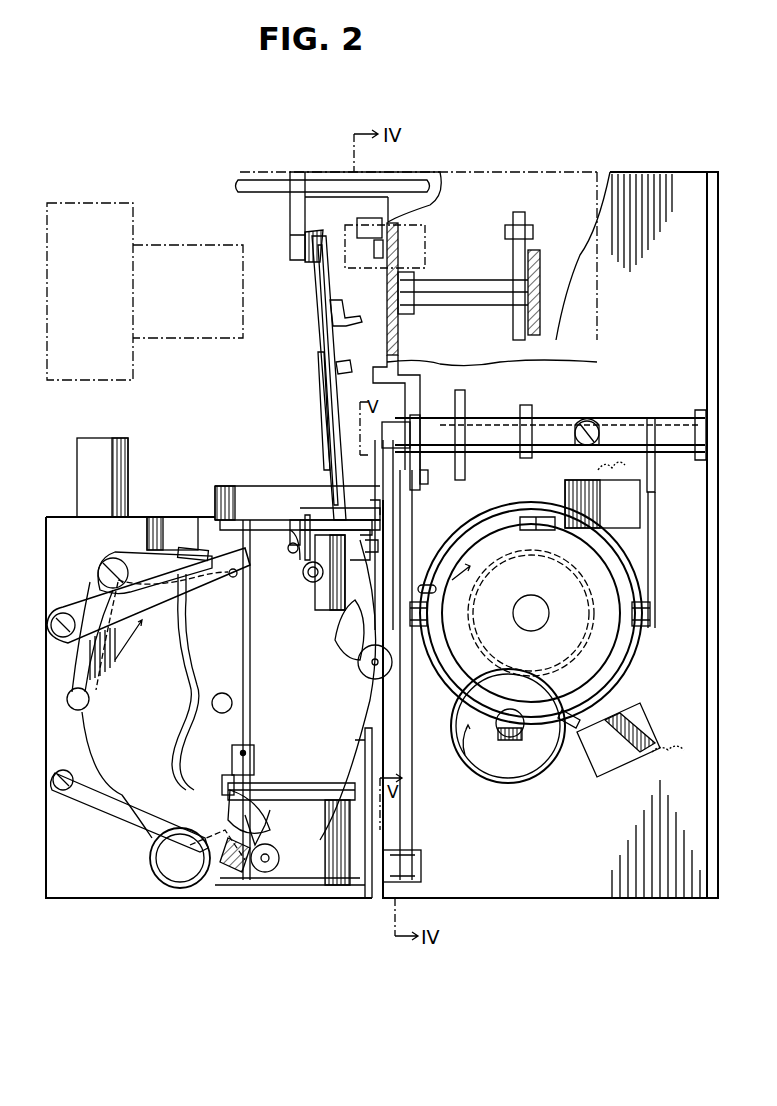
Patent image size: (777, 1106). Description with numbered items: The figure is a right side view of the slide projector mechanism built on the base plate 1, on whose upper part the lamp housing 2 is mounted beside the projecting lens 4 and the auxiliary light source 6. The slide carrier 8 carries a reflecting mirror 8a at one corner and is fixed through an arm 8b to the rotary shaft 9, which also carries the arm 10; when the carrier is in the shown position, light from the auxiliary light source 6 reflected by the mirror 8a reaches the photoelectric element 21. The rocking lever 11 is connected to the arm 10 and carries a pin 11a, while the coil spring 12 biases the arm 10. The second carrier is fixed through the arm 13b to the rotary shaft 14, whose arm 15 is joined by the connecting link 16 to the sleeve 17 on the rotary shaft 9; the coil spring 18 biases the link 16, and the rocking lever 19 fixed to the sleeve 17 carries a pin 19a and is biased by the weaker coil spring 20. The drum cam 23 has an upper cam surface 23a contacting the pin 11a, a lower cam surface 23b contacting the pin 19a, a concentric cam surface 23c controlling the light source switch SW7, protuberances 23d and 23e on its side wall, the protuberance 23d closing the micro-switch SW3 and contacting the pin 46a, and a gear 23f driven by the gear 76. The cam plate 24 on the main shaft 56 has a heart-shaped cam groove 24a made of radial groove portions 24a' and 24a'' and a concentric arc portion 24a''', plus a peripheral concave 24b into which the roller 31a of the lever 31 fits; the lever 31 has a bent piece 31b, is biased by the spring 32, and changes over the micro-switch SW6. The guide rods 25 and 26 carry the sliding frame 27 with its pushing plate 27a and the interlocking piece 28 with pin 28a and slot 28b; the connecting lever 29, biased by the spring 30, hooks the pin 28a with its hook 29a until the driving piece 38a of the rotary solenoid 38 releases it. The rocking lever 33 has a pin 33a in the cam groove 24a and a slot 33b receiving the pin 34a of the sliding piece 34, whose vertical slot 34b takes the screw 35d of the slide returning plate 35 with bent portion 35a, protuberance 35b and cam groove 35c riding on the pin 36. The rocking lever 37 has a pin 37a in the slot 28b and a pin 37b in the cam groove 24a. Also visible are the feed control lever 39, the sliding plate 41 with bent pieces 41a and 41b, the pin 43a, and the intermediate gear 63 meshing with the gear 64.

The base plate 1 is at (710, 172).
The lamp housing 2 is at (602, 280).
The projecting lens 4 is at (135, 224).
The auxiliary light source 6 is at (425, 230).
The slide carrier 8 is at (357, 224).
The reflecting mirror 8a is at (384, 248).
The arm 8b is at (412, 378).
The rotary shaft 9 is at (462, 430).
The arm 10 is at (420, 468).
The rocking lever 11 is at (413, 822).
The pin 11a is at (428, 616).
The coil spring 12 is at (456, 410).
The arm 13b is at (410, 314).
The rotary shaft 14 is at (503, 290).
The arm 15 is at (513, 246).
The connecting link 16 is at (528, 332).
The sleeve 17 is at (492, 460).
The coil spring 18 is at (577, 418).
The rocking lever 19 is at (656, 582).
The pin 19a is at (645, 626).
The coil spring 20 is at (660, 452).
The photoelectric element 21 is at (320, 262).
The drum cam 23 is at (514, 648).
The upper cam surface 23a is at (520, 510).
The lower cam surface 23b is at (628, 674).
The cam surface 23c is at (498, 545).
The protuberance 23d is at (574, 732).
The protuberance 23e is at (536, 730).
The gear 23f is at (588, 632).
The cam plate 24 is at (90, 750).
The cam groove 24a is at (167, 682).
The groove portion 24a' is at (203, 642).
The groove portion 24a'' is at (150, 758).
The concentric circular arc portion 24a''' is at (313, 707).
The concave 24b is at (88, 707).
The guide rod 25 is at (251, 682).
The guide rod 26 is at (323, 666).
The sliding frame 27 is at (367, 900).
The pushing plate 27a is at (392, 824).
The interlocking piece 28 is at (312, 783).
The pin 28a is at (232, 802).
The slot 28b is at (290, 857).
The connecting lever 29 is at (268, 760).
The hook 29a is at (222, 786).
The spring 30 is at (225, 870).
The lever 31 is at (135, 558).
The roller 31a is at (68, 704).
The bent piece 31b is at (202, 558).
The spring 32 is at (78, 614).
The rocking lever 33 is at (98, 574).
The pin 33a is at (226, 582).
The slot 33b is at (300, 512).
The sliding piece 34 is at (346, 565).
The pin 34a is at (296, 540).
The vertical slot 34b is at (310, 584).
The slide returning plate 35 is at (312, 320).
The bent portion 35a is at (344, 320).
The protuberance 35b is at (350, 362).
The cam groove 35c is at (320, 401).
The screw 35d is at (305, 560).
The pin 36 is at (335, 530).
The rocking lever 37 is at (65, 792).
The pin 37a is at (268, 873).
The pin 37b is at (180, 858).
The rotary solenoid 38 is at (150, 872).
The driving piece 38a is at (180, 834).
The feed control lever 39 is at (275, 486).
The sliding plate 41 is at (372, 470).
The bent piece 41a is at (380, 522).
The bent piece 41b is at (378, 550).
The pin 43a is at (372, 532).
The pin 46a is at (432, 590).
The main shaft 56 is at (222, 693).
The intermediate gear 63 is at (340, 630).
The gear 64 is at (388, 678).
The gear 76 is at (505, 785).
The micro-switch SW3 is at (604, 772).
The micro-switch SW6 is at (170, 515).
The light source ON-OFF switch SW7 is at (565, 488).